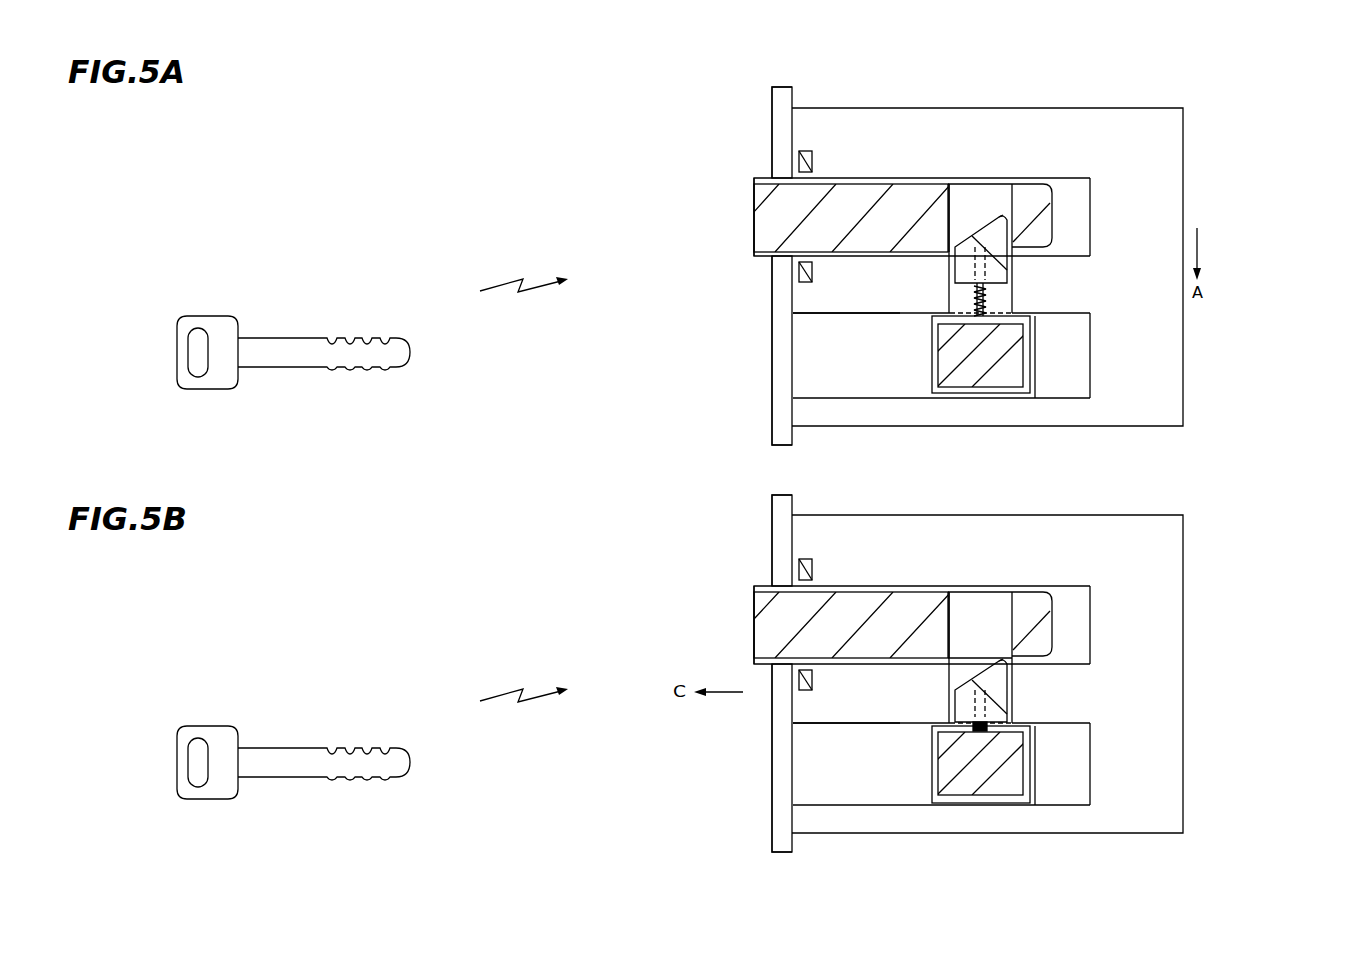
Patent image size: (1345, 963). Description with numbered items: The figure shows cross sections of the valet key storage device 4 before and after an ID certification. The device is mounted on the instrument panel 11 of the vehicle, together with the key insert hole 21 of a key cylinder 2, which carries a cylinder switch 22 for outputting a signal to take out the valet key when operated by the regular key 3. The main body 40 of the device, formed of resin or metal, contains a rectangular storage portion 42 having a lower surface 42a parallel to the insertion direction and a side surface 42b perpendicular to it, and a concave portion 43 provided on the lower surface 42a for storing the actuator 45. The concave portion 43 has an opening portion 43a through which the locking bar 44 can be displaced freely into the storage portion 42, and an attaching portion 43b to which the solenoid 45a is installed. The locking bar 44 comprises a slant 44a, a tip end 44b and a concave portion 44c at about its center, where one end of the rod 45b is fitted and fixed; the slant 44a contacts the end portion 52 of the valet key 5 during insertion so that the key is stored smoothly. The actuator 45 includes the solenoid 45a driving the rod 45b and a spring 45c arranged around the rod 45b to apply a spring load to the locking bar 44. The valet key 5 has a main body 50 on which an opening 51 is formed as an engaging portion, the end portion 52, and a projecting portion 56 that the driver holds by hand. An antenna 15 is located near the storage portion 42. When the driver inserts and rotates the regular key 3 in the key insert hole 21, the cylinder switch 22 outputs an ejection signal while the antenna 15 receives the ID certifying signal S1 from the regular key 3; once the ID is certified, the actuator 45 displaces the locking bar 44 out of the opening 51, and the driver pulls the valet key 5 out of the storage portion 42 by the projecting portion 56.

In FIG. 5A, the key cylinder 2 is at (1002, 296).
In FIG. 5B, the key cylinder 2 is at (962, 704).
In FIG. 5A, the regular key 3 is at (198, 320).
In FIG. 5B, the regular key 3 is at (202, 724).
In FIG. 5A, the valet key storage device 4 is at (938, 262).
In FIG. 5B, the valet key storage device 4 is at (934, 670).
In FIG. 5A, the valet key 5 is at (892, 226).
In FIG. 5B, the valet key 5 is at (892, 635).
In FIG. 5A, the instrument panel 11 is at (772, 108).
In FIG. 5B, the instrument panel 11 is at (772, 518).
In FIG. 5A, the antenna 15 is at (809, 150).
In FIG. 5B, the antenna 15 is at (811, 558).
In FIG. 5A, the key insert hole 21 is at (772, 370).
In FIG. 5B, the key insert hole 21 is at (772, 780).
In FIG. 5A, the cylinder switch 22 is at (1068, 383).
In FIG. 5B, the cylinder switch 22 is at (1068, 798).
In FIG. 5A, the main body 40 is at (1183, 123).
In FIG. 5B, the main body 40 is at (1183, 530).
In FIG. 5A, the storage portion 42 is at (936, 167).
In FIG. 5B, the storage portion 42 is at (934, 576).
In FIG. 5A, the lower surface 42a is at (1074, 257).
In FIG. 5B, the lower surface 42a is at (1078, 667).
In FIG. 5A, the side surface 42b is at (1092, 207).
In FIG. 5B, the side surface 42b is at (1092, 605).
In FIG. 5A, the concave portion 43 is at (1040, 321).
In FIG. 5B, the concave portion 43 is at (1040, 728).
In FIG. 5A, the opening portion 43a is at (1012, 289).
In FIG. 5B, the opening portion 43a is at (1012, 694).
In FIG. 5A, the attaching portion 43b is at (932, 347).
In FIG. 5B, the attaching portion 43b is at (932, 768).
In FIG. 5A, the locking bar 44 is at (1079, 200).
In FIG. 5B, the locking bar 44 is at (941, 623).
In FIG. 5A, the slant 44a is at (973, 236).
In FIG. 5B, the slant 44a is at (975, 679).
In FIG. 5A, the tip end 44b is at (1000, 217).
In FIG. 5B, the tip end 44b is at (1005, 658).
In FIG. 5A, the concave portion 44c is at (987, 272).
In FIG. 5B, the concave portion 44c is at (907, 692).
In FIG. 5A, the actuator 45 is at (974, 379).
In FIG. 5B, the actuator 45 is at (967, 794).
In FIG. 5A, the solenoid 45a is at (993, 382).
In FIG. 5B, the solenoid 45a is at (992, 797).
In FIG. 5A, the rod 45b is at (990, 305).
In FIG. 5B, the rod 45b is at (985, 723).
In FIG. 5A, the spring 45c is at (973, 302).
In FIG. 5B, the spring 45c is at (968, 726).
In FIG. 5A, the main body 50 is at (760, 243).
In FIG. 5B, the main body 50 is at (760, 653).
In FIG. 5A, the opening 51 is at (948, 184).
In FIG. 5B, the opening 51 is at (950, 592).
In FIG. 5A, the end portion 52 is at (1050, 190).
In FIG. 5B, the end portion 52 is at (1051, 600).
In FIG. 5A, the projecting portion 56 is at (770, 178).
In FIG. 5B, the projecting portion 56 is at (770, 586).
In FIG. 5A, the ID certifying signal S1 is at (527, 274).
In FIG. 5B, the ID certifying signal S1 is at (527, 683).